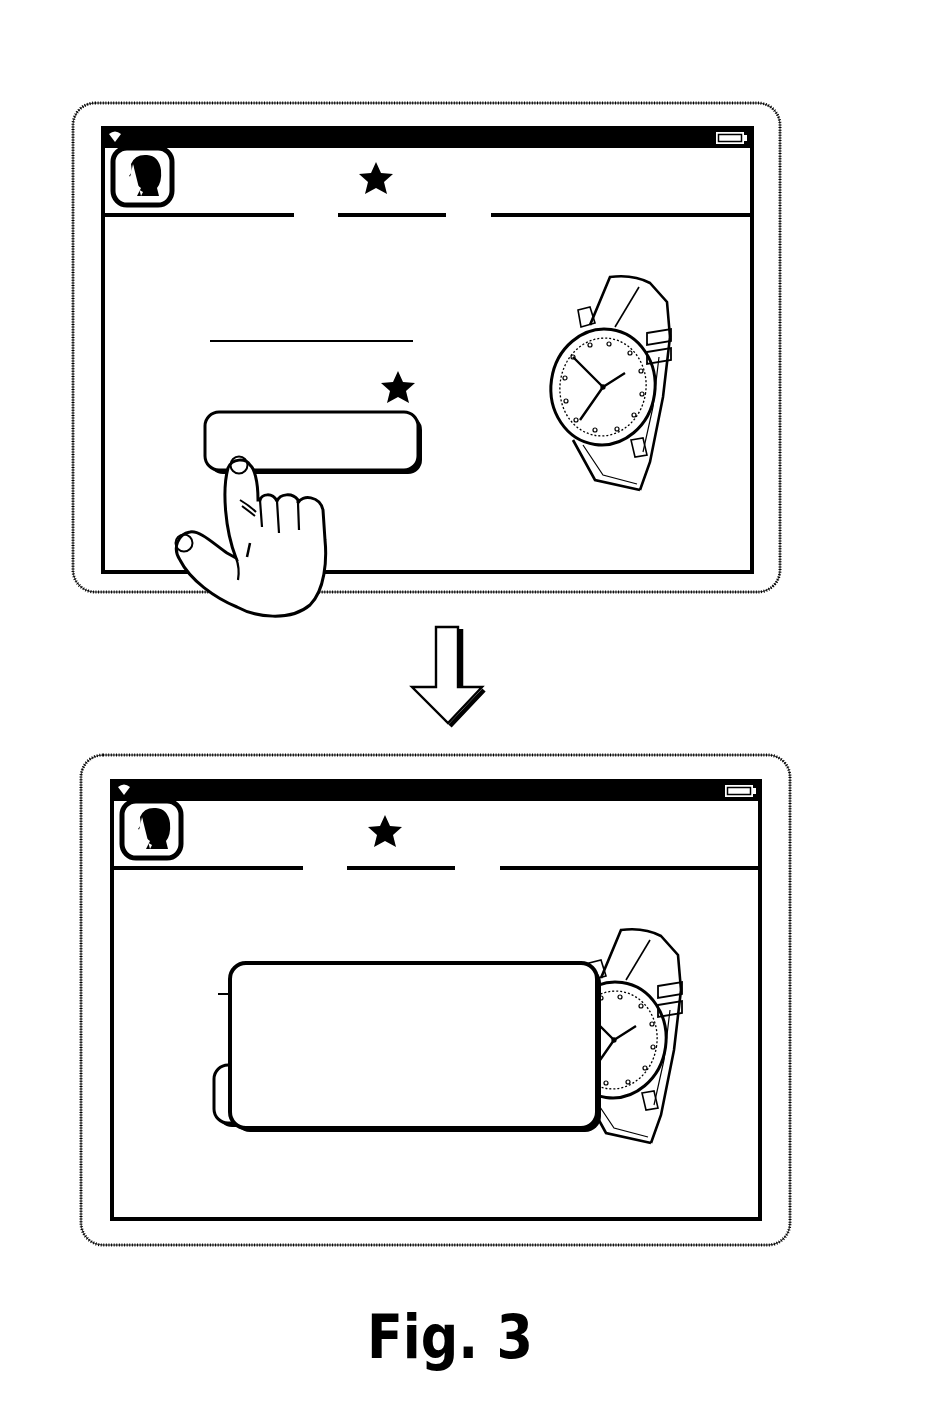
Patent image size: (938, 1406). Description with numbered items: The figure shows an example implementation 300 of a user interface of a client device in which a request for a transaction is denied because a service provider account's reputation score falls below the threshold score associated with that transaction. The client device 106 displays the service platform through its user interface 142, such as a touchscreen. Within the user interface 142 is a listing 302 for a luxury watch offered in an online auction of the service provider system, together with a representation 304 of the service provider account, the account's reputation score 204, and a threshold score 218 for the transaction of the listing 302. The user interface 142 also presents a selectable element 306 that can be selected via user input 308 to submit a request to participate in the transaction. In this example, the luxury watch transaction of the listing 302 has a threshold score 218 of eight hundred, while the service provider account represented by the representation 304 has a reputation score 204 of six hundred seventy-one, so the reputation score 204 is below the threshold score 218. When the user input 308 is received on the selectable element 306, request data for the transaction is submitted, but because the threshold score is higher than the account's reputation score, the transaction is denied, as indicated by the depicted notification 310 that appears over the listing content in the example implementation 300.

The example implementation 300 is at (110, 32).
The client device 106 is at (758, 100).
The user interface 142 is at (617, 128).
The listing 302 is at (170, 292).
The representation 304 is at (262, 198).
The reputation score 204 is at (418, 200).
The threshold score 218 is at (450, 412).
The selectable element 306 is at (352, 452).
The user input 308 is at (297, 581).
The notification 310 is at (510, 1102).